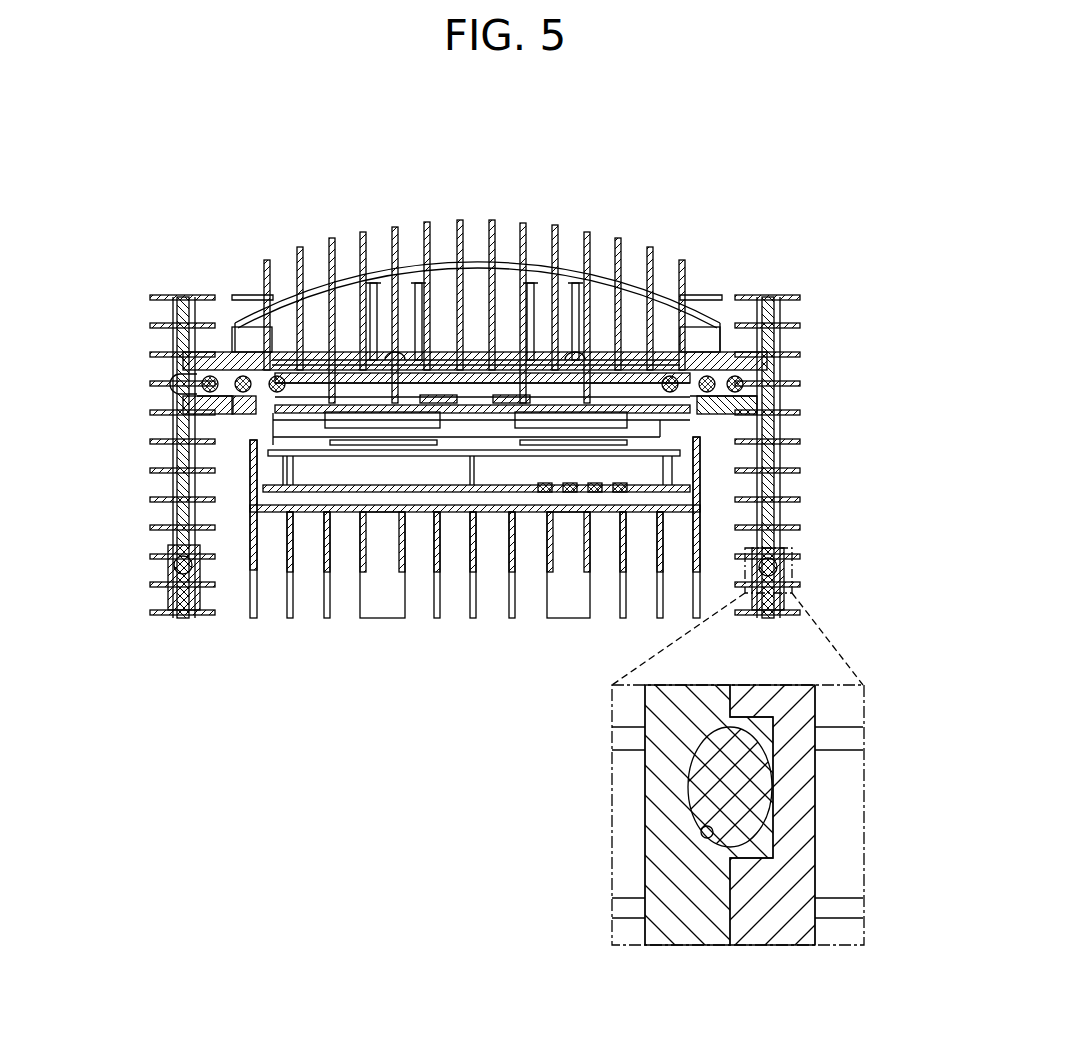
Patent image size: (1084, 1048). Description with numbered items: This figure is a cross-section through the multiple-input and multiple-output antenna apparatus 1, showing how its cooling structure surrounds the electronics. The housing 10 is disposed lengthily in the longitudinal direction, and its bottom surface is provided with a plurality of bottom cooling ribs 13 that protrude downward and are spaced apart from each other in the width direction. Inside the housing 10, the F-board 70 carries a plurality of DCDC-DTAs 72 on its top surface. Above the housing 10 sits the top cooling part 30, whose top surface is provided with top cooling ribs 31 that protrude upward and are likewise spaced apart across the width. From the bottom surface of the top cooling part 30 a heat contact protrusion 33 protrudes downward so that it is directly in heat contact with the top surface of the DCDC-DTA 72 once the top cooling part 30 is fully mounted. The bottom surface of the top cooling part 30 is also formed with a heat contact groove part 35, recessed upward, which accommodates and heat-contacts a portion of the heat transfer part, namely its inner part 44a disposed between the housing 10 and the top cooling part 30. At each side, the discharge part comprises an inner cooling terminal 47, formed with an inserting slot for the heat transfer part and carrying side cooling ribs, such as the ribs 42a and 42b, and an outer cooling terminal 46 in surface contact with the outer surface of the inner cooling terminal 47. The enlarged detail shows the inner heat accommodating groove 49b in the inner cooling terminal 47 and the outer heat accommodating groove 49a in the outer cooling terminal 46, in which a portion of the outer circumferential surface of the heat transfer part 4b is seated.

The multiple-input and multiple-output antenna apparatus 1 is at (222, 243).
The housing 10 is at (475, 559).
The bottom cooling ribs 13 is at (328, 605).
The top cooling part 30 is at (397, 268).
The top cooling ribs 31 is at (556, 226).
The heat contact protrusion 33 is at (507, 375).
The heat contact groove part 35 is at (770, 383).
The side fin 42a is at (745, 490).
The side fin 42b is at (770, 500).
The inner part 44a is at (712, 388).
The outer cooling terminal 46 is at (180, 484).
The inner cooling terminal 47 is at (195, 598).
The F-board 70 is at (357, 410).
The DCDC-DTA 72 is at (507, 400).
The ball member 4b is at (705, 790).
The outer heat accommodating groove 49a is at (765, 845).
The inner heat accommodating groove 49b is at (707, 832).